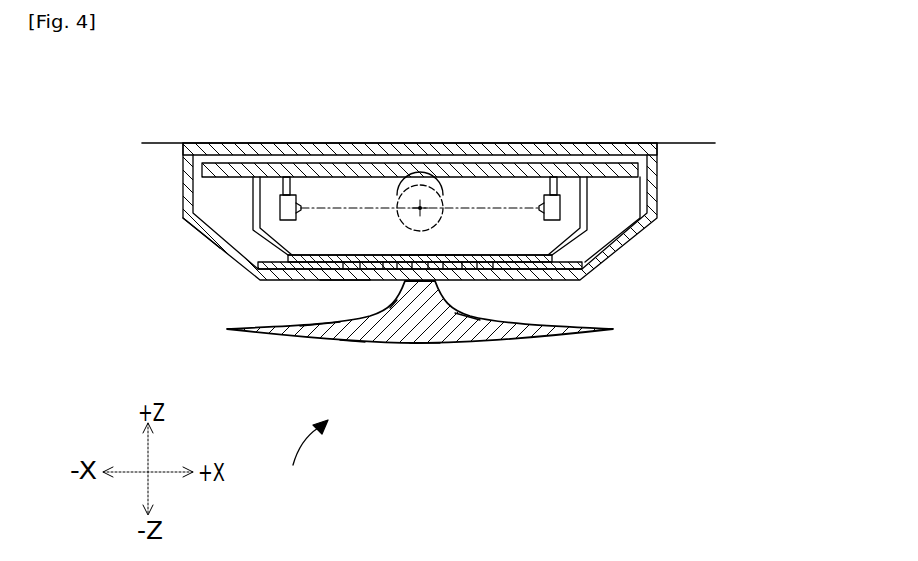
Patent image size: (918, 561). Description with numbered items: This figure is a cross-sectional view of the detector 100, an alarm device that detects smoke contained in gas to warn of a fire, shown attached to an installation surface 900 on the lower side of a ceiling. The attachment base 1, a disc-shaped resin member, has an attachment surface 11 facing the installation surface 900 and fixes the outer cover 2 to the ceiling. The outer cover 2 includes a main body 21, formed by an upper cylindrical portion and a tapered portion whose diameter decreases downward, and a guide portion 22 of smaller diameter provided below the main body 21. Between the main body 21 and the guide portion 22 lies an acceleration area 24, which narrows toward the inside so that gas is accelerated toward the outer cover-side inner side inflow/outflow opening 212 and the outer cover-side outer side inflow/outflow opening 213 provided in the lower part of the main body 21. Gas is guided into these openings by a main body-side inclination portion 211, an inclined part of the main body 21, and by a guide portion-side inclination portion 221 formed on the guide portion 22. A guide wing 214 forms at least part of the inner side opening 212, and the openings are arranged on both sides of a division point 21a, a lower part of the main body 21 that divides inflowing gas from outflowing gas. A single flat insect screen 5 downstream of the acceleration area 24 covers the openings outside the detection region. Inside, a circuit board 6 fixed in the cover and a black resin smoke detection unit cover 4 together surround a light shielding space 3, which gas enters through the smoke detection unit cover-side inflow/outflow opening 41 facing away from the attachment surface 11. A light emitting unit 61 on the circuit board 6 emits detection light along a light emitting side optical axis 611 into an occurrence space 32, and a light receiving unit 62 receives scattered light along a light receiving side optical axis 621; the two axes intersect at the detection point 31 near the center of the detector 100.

The attachment base 1 is at (459, 146).
The installation surface 900 is at (688, 147).
The attachment surface 11 is at (425, 143).
The outer cover 2 is at (421, 243).
The main body 21 is at (446, 181).
The main body-side inclination portion 211 is at (214, 242).
The outer cover-side inner side inflow/outflow opening 212 is at (393, 300).
The outer cover-side outer side inflow/outflow opening 213 is at (351, 333).
The guide wing 214 is at (417, 258).
The division point 21a is at (427, 337).
The guide portion 22 is at (420, 352).
The guide portion-side inclination portion 221 is at (312, 310).
The acceleration area 24 is at (343, 298).
The light shielding space 3 is at (548, 160).
The detection point 31 is at (398, 197).
The occurrence space 32 is at (442, 196).
The smoke detection unit cover 4 is at (455, 212).
The smoke detection unit cover-side inflow/outflow opening 41 is at (473, 317).
The insect screen 5 is at (503, 286).
The circuit board 6 is at (436, 152).
The light emitting unit 61 is at (225, 155).
The light emitting side optical axis 611 is at (301, 197).
The light receiving unit 62 is at (633, 152).
The light receiving side optical axis 621 is at (548, 192).
The detector 100 is at (301, 458).